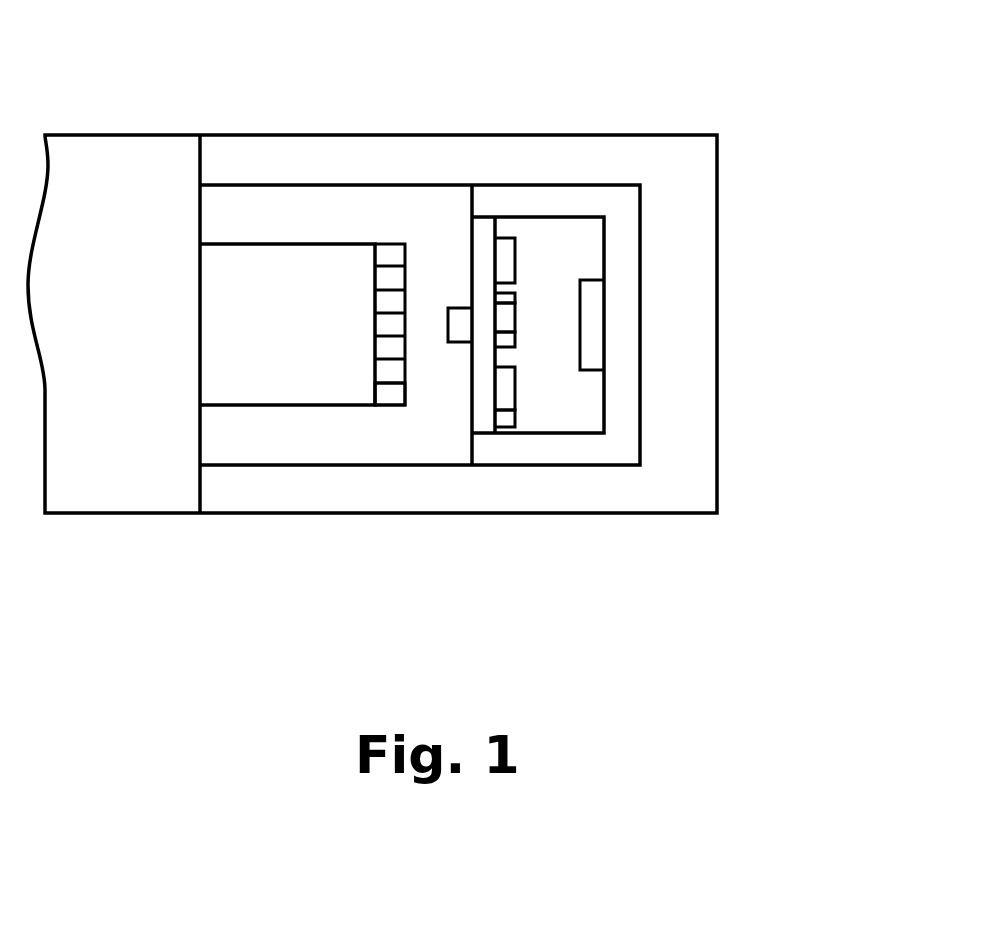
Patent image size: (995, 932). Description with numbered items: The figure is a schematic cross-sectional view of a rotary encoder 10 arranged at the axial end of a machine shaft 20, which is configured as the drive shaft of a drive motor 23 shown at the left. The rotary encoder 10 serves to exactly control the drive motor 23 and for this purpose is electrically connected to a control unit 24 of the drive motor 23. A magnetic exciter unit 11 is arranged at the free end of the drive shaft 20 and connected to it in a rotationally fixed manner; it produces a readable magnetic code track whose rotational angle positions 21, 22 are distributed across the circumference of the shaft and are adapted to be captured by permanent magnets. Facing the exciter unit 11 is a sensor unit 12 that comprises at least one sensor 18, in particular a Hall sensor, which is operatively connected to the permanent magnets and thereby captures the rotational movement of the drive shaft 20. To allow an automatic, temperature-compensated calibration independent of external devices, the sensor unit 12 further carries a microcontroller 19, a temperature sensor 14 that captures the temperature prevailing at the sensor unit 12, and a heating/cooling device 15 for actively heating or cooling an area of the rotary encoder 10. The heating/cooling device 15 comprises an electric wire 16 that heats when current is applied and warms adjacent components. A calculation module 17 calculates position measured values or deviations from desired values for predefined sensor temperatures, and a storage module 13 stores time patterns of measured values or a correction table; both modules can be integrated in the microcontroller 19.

The rotary encoder 10 is at (430, 403).
The magnetic exciter unit 11 is at (392, 226).
The sensor unit 12 is at (483, 235).
The storage module 13 is at (507, 255).
The temperature sensor 14 is at (503, 297).
The heating/cooling device 15 is at (503, 320).
The electric wire 16 is at (507, 340).
The calculation module 17 is at (503, 418).
The sensor 18 is at (458, 306).
The microcontroller 19 is at (507, 395).
The machine shaft 20 is at (277, 290).
The rotational angle position 21 is at (386, 255).
The rotational angle position 22 is at (390, 395).
The drive motor 23 is at (115, 205).
The control unit 24 is at (598, 320).